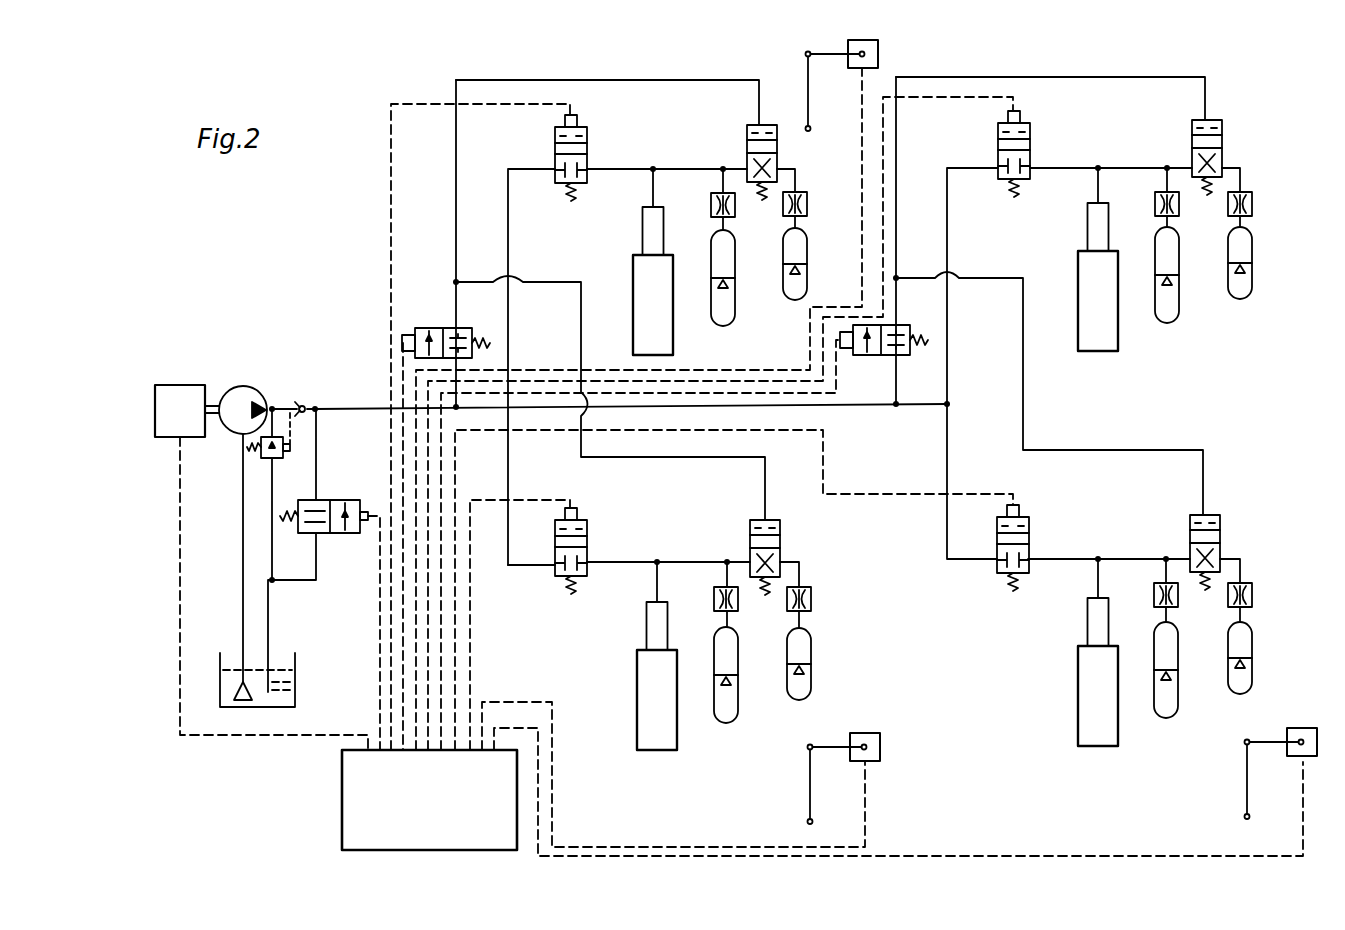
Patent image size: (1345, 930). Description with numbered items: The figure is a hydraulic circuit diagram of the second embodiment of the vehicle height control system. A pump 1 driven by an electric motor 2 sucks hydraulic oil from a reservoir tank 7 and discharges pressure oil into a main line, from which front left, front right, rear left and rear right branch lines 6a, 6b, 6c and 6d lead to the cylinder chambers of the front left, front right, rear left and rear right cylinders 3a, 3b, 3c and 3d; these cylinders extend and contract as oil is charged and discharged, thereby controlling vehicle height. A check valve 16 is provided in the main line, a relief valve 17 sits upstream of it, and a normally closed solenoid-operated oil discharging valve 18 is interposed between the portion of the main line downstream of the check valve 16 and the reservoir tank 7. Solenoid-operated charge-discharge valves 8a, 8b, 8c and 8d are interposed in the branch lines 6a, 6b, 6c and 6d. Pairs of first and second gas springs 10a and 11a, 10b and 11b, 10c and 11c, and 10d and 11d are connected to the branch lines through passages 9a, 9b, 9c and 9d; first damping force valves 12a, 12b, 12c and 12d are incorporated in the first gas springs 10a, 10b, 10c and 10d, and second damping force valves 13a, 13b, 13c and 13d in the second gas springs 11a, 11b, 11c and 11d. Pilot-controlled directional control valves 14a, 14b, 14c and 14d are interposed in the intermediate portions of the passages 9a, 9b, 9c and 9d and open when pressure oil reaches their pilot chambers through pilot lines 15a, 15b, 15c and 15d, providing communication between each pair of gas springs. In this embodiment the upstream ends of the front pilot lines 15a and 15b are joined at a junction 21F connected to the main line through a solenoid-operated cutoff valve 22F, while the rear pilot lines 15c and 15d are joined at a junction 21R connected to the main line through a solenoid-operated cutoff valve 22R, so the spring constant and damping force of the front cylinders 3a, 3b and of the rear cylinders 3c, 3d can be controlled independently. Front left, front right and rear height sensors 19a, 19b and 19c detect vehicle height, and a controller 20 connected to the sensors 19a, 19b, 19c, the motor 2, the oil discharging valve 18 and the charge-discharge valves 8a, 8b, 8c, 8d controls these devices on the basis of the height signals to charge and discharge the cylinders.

The pump 1 is at (247, 386).
The electric motor 2 is at (186, 385).
The front left cylinder 3a is at (637, 680).
The front right cylinder 3b is at (633, 287).
The rear left cylinder 3c is at (1078, 686).
The rear right cylinder 3d is at (1118, 333).
The front left branch line 6a is at (533, 566).
The front right branch line 6b is at (508, 232).
The rear left branch line 6c is at (947, 548).
The rear right branch line 6d is at (947, 230).
The reservoir tank 7 is at (296, 660).
The front left charge-discharge valve 8a is at (589, 535).
The front right charge-discharge valve 8b is at (589, 136).
The rear left charge-discharge valve 8c is at (1030, 533).
The rear right charge-discharge valve 8d is at (1032, 131).
The passage 9a is at (800, 575).
The passage 9b is at (796, 176).
The passage 9c is at (1240, 565).
The passage 9d is at (1240, 174).
The first gas spring 10a is at (735, 720).
The first gas spring 10b is at (733, 320).
The first gas spring 10c is at (1178, 680).
The first gas spring 10d is at (1178, 305).
The second gas spring 11a is at (811, 665).
The second gas spring 11b is at (807, 260).
The second gas spring 11c is at (1252, 635).
The second gas spring 11d is at (1252, 255).
The first damping force valve 12a is at (714, 605).
The first damping force valve 12b is at (711, 210).
The first damping force valve 12c is at (1154, 600).
The first damping force valve 12d is at (1155, 204).
The second damping force valve 13a is at (811, 602).
The second damping force valve 13b is at (807, 205).
The second damping force valve 13c is at (1260, 587).
The second damping force valve 13d is at (1252, 205).
The front left pilot-controlled directional control valve 14a is at (781, 542).
The front right pilot-controlled directional control valve 14b is at (745, 142).
The rear left pilot-controlled directional control valve 14c is at (1222, 527).
The rear right pilot-controlled directional control valve 14d is at (1224, 135).
The front left pilot line 15a is at (640, 457).
The front right pilot line 15b is at (671, 80).
The rear left pilot line 15c is at (1120, 450).
The rear right pilot line 15d is at (1107, 77).
The check valve 16 is at (303, 405).
The relief valve 17 is at (291, 452).
The oil discharging valve 18 is at (342, 533).
The front left height sensor 19a is at (880, 746).
The front right height sensor 19b is at (877, 55).
The rear height sensor 19c is at (1305, 728).
The controller 20 is at (342, 800).
The junction 21F is at (456, 280).
The junction 21R is at (896, 276).
The solenoid-operated cutoff valve 22F is at (432, 328).
The solenoid-operated cutoff valve 22R is at (905, 322).